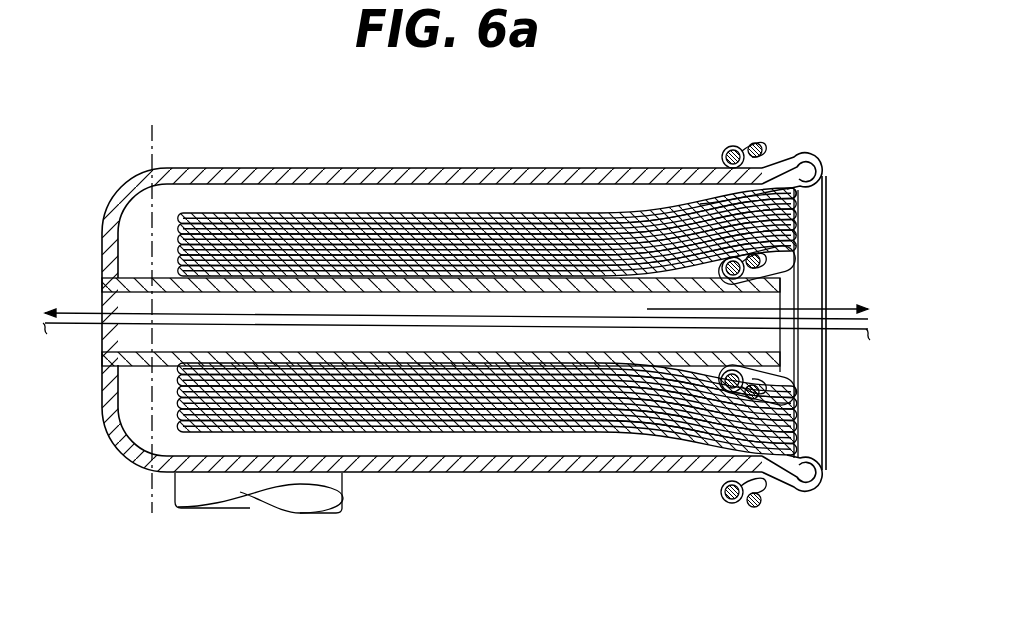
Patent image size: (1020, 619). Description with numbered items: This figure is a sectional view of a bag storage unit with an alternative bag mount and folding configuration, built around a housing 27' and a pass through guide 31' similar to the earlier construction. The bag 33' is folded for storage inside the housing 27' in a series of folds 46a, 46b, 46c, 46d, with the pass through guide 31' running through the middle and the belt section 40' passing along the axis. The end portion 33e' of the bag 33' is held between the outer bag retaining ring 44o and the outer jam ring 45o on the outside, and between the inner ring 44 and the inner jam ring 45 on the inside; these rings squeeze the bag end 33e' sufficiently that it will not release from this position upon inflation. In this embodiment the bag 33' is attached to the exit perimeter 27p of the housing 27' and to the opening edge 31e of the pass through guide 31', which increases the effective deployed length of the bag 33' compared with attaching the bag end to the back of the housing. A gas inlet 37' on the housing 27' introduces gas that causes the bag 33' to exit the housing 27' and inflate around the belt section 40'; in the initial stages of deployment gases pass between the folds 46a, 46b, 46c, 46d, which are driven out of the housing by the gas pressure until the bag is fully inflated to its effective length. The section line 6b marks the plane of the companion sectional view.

The section line 6b is at (140, 150).
The fold 46a is at (232, 212).
The fold 46b is at (178, 242).
The fold 46c is at (178, 255).
The fold 46d is at (178, 268).
The pass through guide 31' is at (399, 320).
The opening edge 31e is at (779, 283).
The belt section 40' is at (446, 349).
The bag 33' is at (410, 194).
The end portion of bag 33e' is at (790, 211).
The housing 27' is at (487, 460).
The exit perimeter 27p is at (790, 152).
The outer bag retaining ring 44o is at (733, 146).
The outer jam ring 45o is at (755, 142).
The inner ring 44 is at (794, 423).
The inner jam ring 45 is at (796, 397).
The gas inlet 37' is at (289, 507).